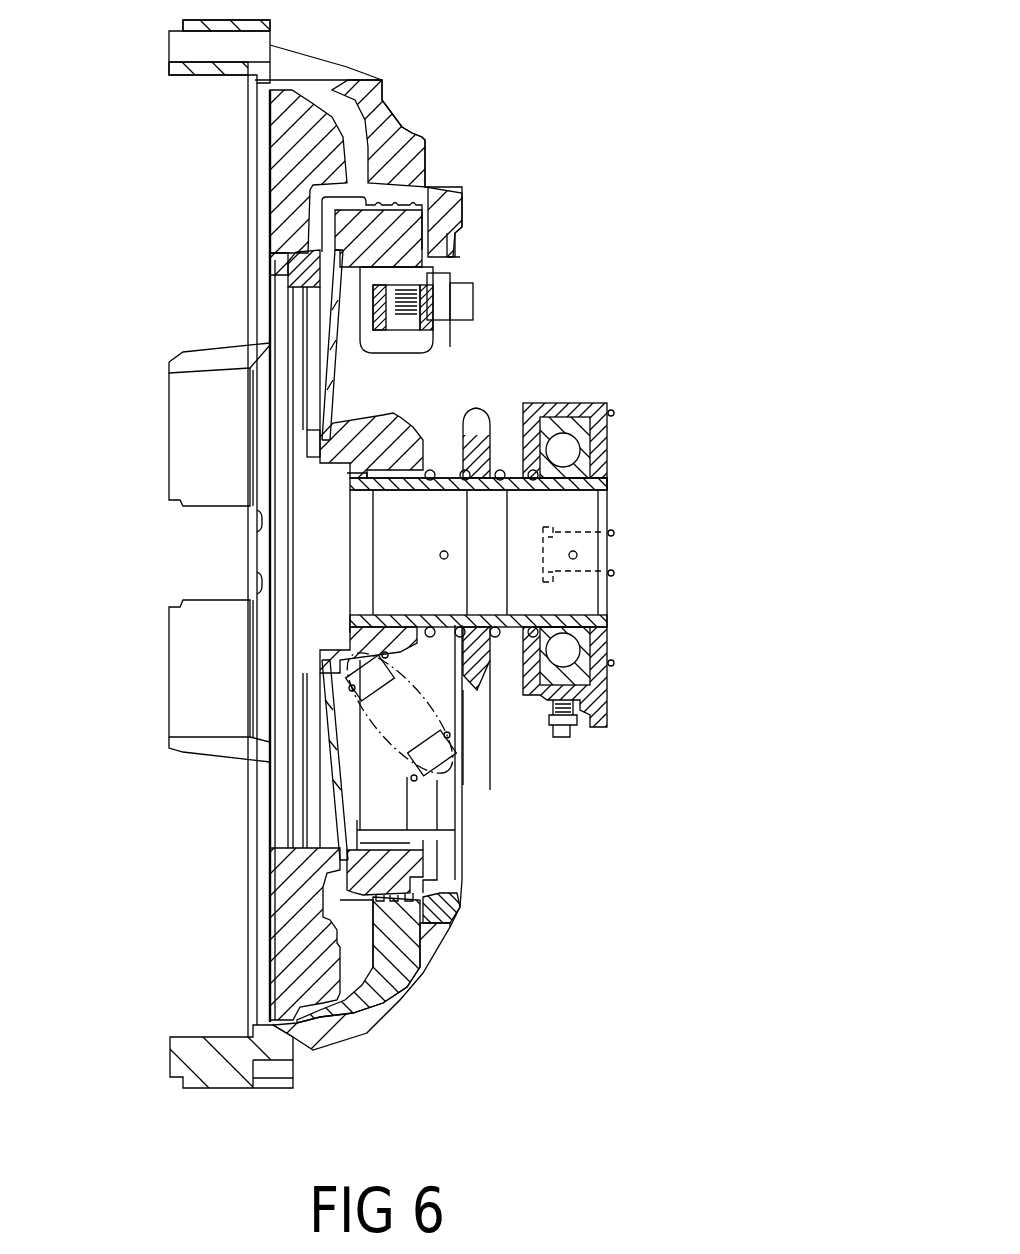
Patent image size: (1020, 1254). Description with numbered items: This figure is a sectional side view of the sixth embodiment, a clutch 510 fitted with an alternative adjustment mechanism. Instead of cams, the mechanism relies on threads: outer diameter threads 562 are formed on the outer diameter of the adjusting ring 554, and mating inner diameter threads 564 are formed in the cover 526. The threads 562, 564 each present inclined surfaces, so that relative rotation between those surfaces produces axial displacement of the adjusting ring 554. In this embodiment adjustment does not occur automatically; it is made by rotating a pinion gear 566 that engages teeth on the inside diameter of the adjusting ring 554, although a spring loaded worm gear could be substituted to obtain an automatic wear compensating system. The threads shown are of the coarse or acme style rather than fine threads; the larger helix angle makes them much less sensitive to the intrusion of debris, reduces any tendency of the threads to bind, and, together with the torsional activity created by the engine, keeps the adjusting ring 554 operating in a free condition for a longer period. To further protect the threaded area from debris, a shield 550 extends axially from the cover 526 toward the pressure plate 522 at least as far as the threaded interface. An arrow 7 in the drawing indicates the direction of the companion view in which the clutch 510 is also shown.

The clutch 510 is at (631, 78).
The pressure plate 522 is at (270, 175).
The cover 526 is at (383, 1040).
The shield 550 is at (380, 826).
The adjusting ring 554 is at (334, 880).
The outer diameter threads 562 is at (420, 906).
The inner diameter threads 564 is at (413, 891).
The pinion gear 566 is at (400, 339).
The section view direction arrow 7 is at (703, 553).